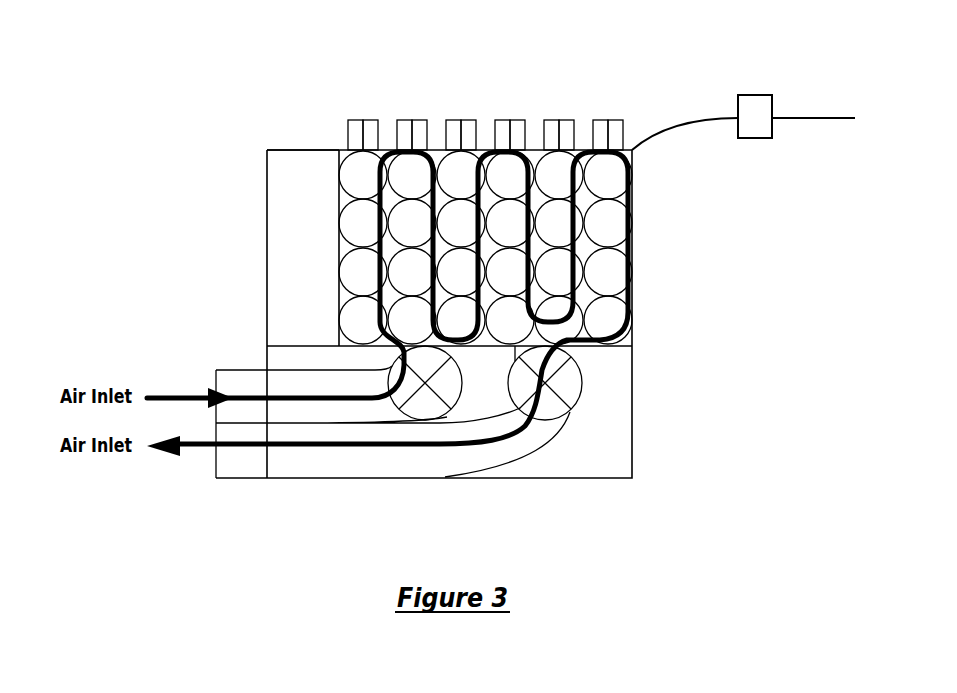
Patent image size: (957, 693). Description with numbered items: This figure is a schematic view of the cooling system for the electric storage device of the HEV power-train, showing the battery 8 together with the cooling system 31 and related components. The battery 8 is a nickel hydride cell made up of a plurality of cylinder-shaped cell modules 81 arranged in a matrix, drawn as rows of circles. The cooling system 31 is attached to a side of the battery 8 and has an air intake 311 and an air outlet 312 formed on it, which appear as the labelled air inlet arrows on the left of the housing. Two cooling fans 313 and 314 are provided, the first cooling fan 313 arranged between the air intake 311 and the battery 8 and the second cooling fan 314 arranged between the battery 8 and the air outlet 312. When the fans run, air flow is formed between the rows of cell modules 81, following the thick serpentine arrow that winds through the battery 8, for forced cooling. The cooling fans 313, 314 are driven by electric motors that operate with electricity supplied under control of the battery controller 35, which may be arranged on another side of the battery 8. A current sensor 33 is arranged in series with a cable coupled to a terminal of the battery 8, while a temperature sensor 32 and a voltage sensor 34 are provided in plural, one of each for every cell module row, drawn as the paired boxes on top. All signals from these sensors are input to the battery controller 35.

The battery 8 is at (338, 143).
The cooling system 31 is at (664, 400).
The air intake 311 is at (228, 370).
The air outlet 312 is at (232, 480).
The cooling fan 313 is at (422, 410).
The cooling fan 314 is at (545, 410).
The temperature sensor 32 is at (356, 120).
The current sensor 33 is at (753, 95).
The voltage sensor 34 is at (370, 120).
The battery controller 35 is at (267, 180).
The cell module 81 is at (618, 272).